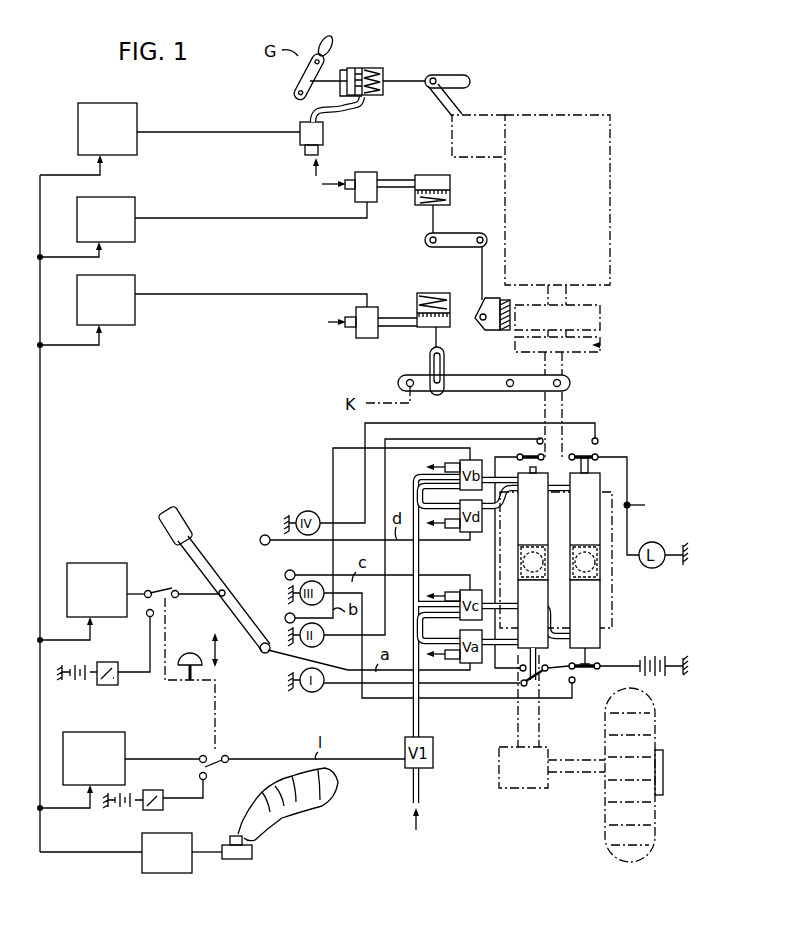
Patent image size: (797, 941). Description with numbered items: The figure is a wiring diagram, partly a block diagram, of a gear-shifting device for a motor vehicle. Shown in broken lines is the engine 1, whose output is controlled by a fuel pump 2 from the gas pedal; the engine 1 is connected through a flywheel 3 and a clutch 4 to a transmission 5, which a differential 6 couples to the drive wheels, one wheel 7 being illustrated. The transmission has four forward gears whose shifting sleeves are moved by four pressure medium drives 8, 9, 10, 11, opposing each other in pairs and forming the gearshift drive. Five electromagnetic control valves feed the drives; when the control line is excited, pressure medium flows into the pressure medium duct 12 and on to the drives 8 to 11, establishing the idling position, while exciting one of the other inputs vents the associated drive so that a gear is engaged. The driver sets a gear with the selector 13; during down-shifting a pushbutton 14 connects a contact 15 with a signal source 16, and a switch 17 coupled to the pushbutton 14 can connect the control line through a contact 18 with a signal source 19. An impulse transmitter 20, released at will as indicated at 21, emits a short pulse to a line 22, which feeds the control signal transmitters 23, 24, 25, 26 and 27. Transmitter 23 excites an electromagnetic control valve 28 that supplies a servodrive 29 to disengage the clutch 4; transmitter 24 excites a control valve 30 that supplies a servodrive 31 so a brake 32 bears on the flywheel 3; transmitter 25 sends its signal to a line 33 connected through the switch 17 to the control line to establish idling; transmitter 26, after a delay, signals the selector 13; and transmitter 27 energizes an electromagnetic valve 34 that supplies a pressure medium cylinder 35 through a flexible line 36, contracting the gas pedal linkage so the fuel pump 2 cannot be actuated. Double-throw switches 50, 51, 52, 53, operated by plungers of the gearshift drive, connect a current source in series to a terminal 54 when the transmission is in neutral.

The motor vehicle engine 1 is at (557, 118).
The fuel pump 2 is at (491, 118).
The flywheel 3 is at (600, 318).
The clutch 4 is at (602, 345).
The transmission 5 is at (612, 604).
The differential 6 is at (522, 788).
The wheel 7 is at (618, 817).
The pressure medium drive 8 is at (540, 604).
The pressure medium drive 9 is at (540, 534).
The pressure medium drive 10 is at (594, 604).
The pressure medium drive 11 is at (594, 534).
The pressure medium duct 12 is at (420, 722).
The selector 13 is at (205, 552).
The pushbutton 14 is at (196, 655).
The contact 15 is at (154, 613).
The signal source 16 is at (108, 685).
The switch 17 is at (220, 752).
The contact 18 is at (207, 778).
The signal source 19 is at (163, 808).
The impulse transmitter 20 is at (170, 866).
The release actuation 21 is at (252, 852).
The line 22 is at (93, 852).
The control signal transmitter 23 is at (128, 320).
The control signal transmitter 24 is at (128, 235).
The control signal transmitter 25 is at (118, 745).
The control signal transmitter 26 is at (107, 575).
The control signal transmitter 27 is at (138, 149).
The electromagnetic control valve 28 is at (366, 338).
The servodrive 29 is at (418, 295).
The electromagnetic control valve 30 is at (373, 203).
The servodrive 31 is at (428, 175).
The brake 32 is at (492, 332).
The line 33 is at (182, 757).
The electromagnetic valve 34 is at (301, 140).
The pressure medium cylinder 35 is at (372, 68).
The flexible line 36 is at (368, 105).
The double-throw switch 50 is at (584, 672).
The double-throw switch 51 is at (533, 678).
The double-throw switch 52 is at (533, 447).
The double-throw switch 53 is at (585, 447).
The terminal 54 is at (632, 500).